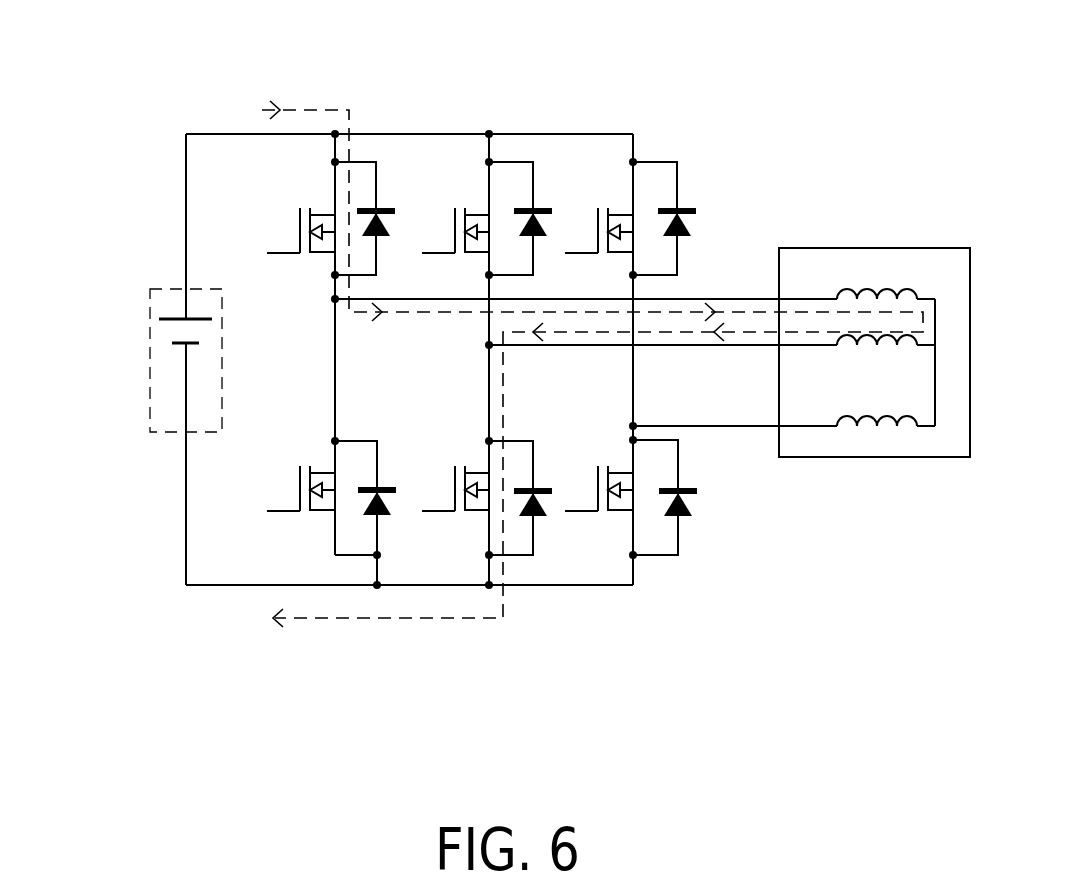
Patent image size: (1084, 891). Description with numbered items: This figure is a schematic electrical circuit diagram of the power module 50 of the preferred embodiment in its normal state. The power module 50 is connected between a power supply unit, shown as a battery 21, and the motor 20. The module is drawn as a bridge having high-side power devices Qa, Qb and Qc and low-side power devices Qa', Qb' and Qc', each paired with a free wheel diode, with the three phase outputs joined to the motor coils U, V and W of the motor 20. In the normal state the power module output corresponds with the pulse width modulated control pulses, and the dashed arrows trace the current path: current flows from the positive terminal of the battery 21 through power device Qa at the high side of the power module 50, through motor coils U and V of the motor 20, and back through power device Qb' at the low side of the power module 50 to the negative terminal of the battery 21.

The power module 50 is at (606, 104).
The motor 20 is at (892, 228).
The battery 21 is at (150, 376).